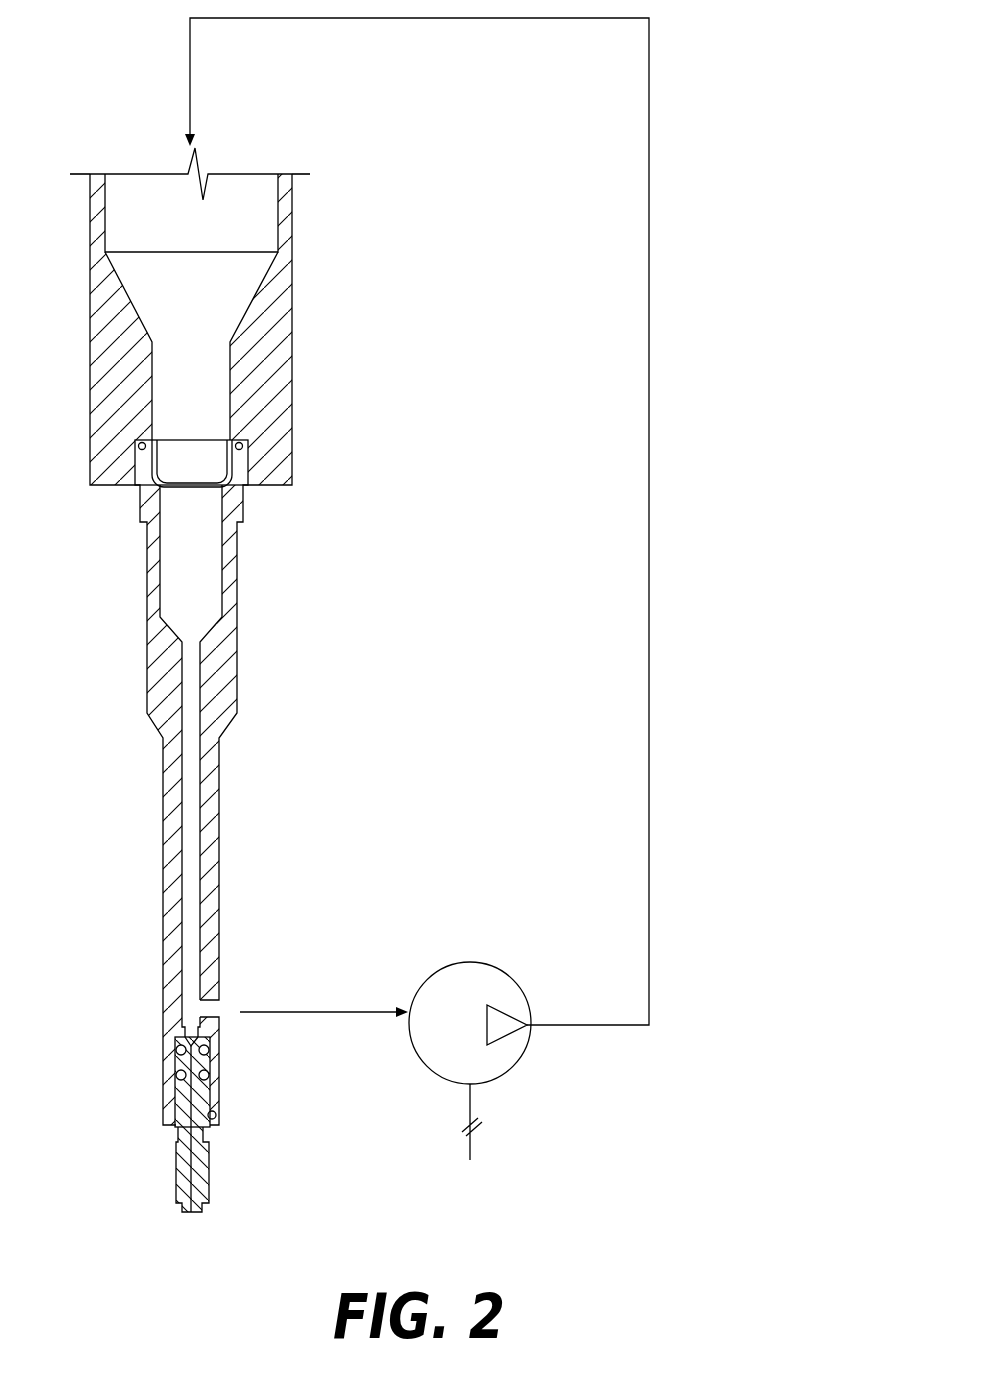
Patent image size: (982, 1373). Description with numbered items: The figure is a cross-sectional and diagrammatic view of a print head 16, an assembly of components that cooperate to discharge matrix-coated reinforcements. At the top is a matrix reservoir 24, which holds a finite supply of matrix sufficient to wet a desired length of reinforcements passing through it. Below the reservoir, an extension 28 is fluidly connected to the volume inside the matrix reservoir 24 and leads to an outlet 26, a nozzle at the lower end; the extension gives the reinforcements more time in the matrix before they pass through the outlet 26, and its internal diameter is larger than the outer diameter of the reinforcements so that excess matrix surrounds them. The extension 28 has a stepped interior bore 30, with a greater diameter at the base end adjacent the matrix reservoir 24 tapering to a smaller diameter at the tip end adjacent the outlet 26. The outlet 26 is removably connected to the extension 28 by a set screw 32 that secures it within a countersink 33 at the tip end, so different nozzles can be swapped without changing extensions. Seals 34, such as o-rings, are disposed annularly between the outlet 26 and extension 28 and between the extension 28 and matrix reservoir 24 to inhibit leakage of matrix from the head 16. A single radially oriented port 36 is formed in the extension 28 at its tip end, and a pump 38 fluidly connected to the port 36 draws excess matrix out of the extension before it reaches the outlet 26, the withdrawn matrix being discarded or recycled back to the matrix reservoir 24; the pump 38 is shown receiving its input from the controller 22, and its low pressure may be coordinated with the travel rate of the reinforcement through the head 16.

The head 16 is at (76, 124).
The controller 22 is at (470, 1153).
The matrix reservoir 24 is at (206, 235).
The outlet 26 is at (208, 1172).
The extension 28 is at (239, 716).
The stepped interior bore 30 is at (221, 592).
The set screw 32 is at (217, 1078).
The countersink 33 is at (216, 1118).
The seal 34 is at (239, 443).
The port 36 is at (221, 1004).
The pump 38 is at (461, 1040).